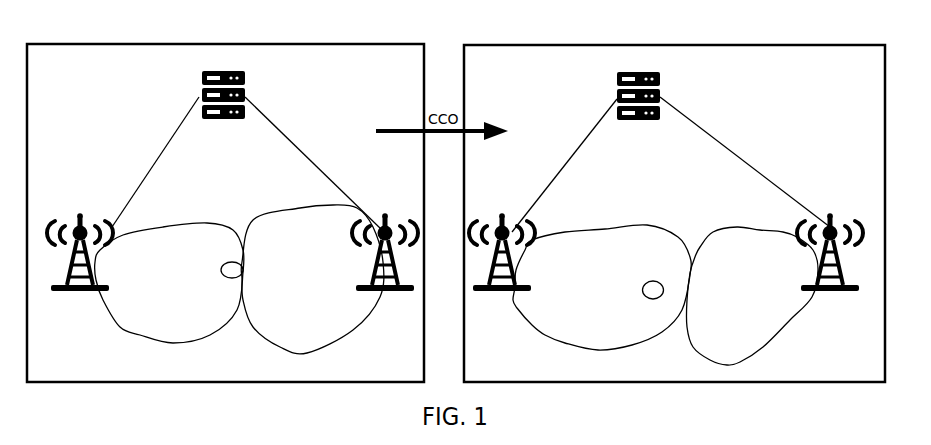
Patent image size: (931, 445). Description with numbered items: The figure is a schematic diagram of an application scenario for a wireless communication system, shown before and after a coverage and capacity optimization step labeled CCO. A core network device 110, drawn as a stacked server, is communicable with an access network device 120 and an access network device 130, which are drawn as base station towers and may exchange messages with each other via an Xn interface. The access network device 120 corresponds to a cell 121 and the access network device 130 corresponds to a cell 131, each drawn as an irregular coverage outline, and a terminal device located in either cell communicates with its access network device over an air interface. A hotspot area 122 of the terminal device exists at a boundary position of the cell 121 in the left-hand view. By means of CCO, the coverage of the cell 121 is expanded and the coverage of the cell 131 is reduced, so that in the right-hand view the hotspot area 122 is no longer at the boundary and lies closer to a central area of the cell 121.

The core network device 110 is at (252, 97).
The access network device 120 is at (85, 207).
The cell 121 is at (147, 323).
The hotspot area 122 is at (223, 278).
The access network device 130 is at (392, 213).
The cell 131 is at (282, 333).